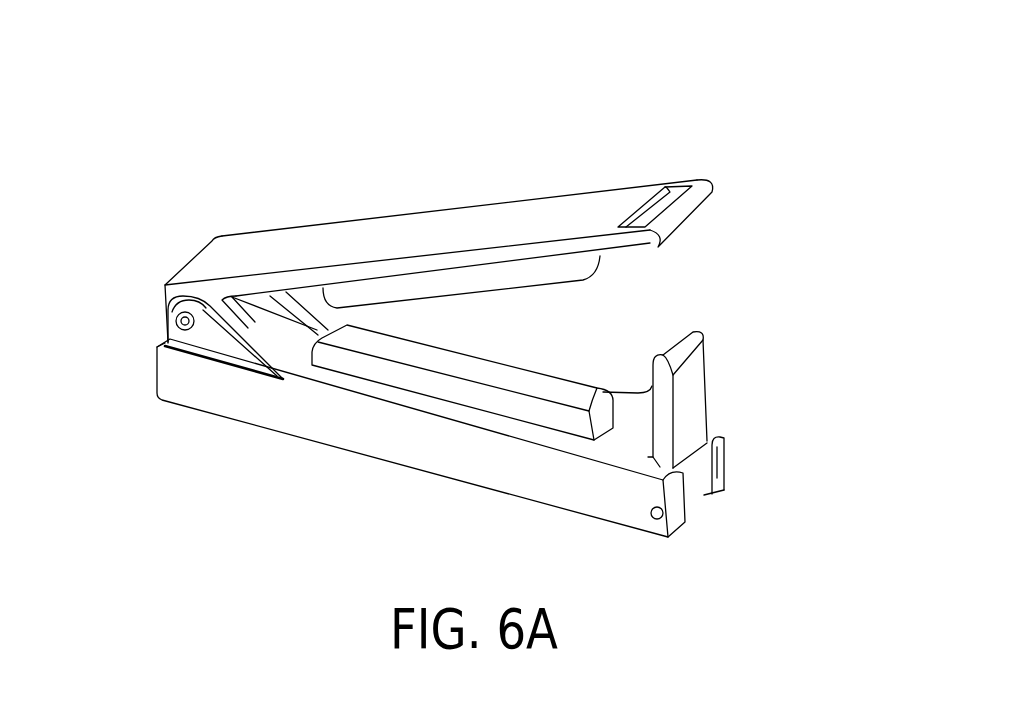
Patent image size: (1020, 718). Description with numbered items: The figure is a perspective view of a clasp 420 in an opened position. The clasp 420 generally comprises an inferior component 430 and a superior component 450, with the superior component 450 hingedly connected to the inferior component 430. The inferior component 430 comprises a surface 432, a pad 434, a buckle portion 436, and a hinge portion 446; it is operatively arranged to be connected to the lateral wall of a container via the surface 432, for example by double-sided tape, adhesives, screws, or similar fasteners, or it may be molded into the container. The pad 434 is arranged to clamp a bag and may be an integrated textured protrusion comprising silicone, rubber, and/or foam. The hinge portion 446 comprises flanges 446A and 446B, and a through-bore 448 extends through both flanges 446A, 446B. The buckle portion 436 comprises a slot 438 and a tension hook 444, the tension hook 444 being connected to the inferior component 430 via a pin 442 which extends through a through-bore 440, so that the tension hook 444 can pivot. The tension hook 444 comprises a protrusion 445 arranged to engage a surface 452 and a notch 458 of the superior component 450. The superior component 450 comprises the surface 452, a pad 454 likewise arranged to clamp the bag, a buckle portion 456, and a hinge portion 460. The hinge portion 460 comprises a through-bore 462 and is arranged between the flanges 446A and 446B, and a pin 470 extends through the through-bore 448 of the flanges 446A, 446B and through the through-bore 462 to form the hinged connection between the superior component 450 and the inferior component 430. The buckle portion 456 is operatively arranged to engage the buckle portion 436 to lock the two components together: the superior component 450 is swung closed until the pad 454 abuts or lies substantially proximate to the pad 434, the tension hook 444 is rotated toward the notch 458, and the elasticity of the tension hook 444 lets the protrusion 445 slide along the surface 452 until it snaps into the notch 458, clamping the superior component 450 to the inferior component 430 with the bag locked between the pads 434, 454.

The clasp 420 is at (521, 71).
The inferior component 430 is at (528, 485).
The surface 432 is at (333, 451).
The pad 434 is at (460, 392).
The buckle portion 436 is at (730, 417).
The slot 438 is at (703, 513).
The through-bore 440 is at (651, 517).
The pin 442 is at (658, 520).
The tension hook 444 is at (693, 382).
The protrusion 445 is at (637, 387).
The hinge portion 446 is at (150, 299).
The flange 446A is at (226, 350).
The flange 446B is at (276, 305).
The through-bore 448 is at (187, 313).
The superior component 450 is at (375, 230).
The surface 452 is at (305, 242).
The pad 454 is at (482, 290).
The buckle portion 456 is at (692, 160).
The notch 458 is at (653, 214).
The hinge portion 460 is at (246, 321).
The through-bore 462 is at (207, 298).
The pin 470 is at (178, 325).